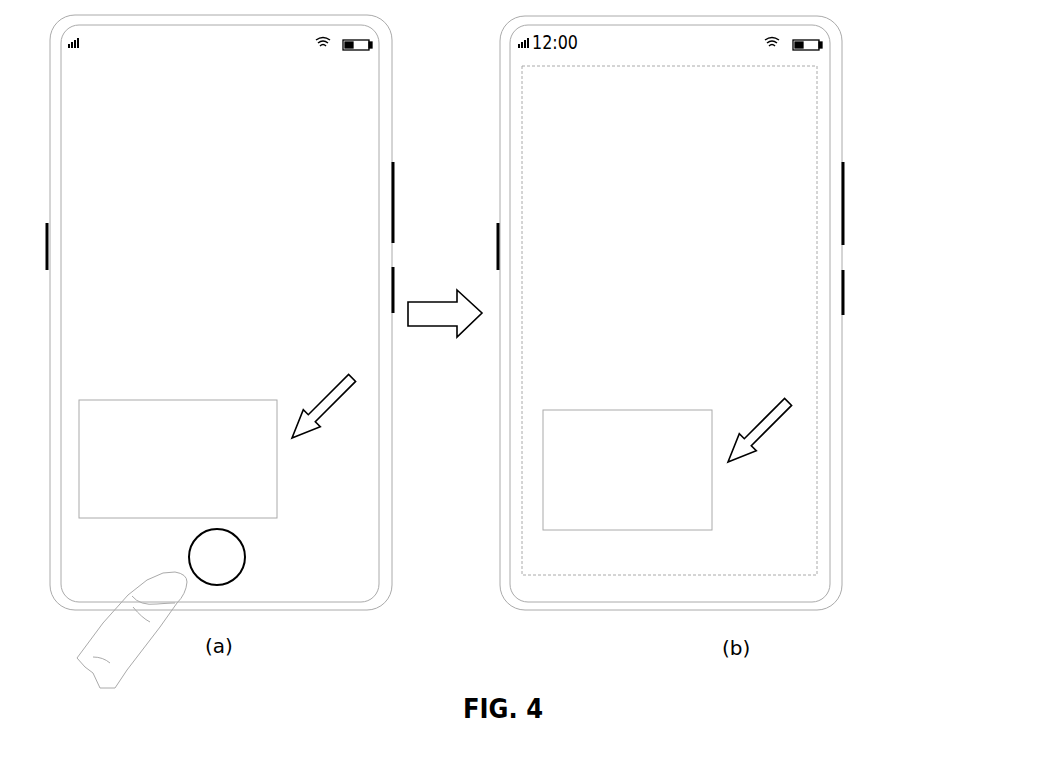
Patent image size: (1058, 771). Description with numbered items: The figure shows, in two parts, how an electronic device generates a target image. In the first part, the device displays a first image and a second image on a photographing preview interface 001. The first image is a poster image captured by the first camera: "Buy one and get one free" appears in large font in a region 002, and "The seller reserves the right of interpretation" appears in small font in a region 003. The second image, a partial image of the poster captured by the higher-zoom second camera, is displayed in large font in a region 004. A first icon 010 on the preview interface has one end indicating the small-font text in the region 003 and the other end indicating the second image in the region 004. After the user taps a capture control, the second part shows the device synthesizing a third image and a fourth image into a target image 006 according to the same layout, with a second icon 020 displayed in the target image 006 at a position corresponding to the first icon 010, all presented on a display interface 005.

The photographing preview interface 001 is at (335, 82).
The region of the first image 002 is at (175, 197).
The region of the first image 003 is at (302, 284).
The region of the second image 004 is at (143, 396).
The display interface 005 is at (822, 107).
The target image 006 is at (808, 145).
The first icon 010 is at (322, 428).
The second icon 020 is at (757, 447).